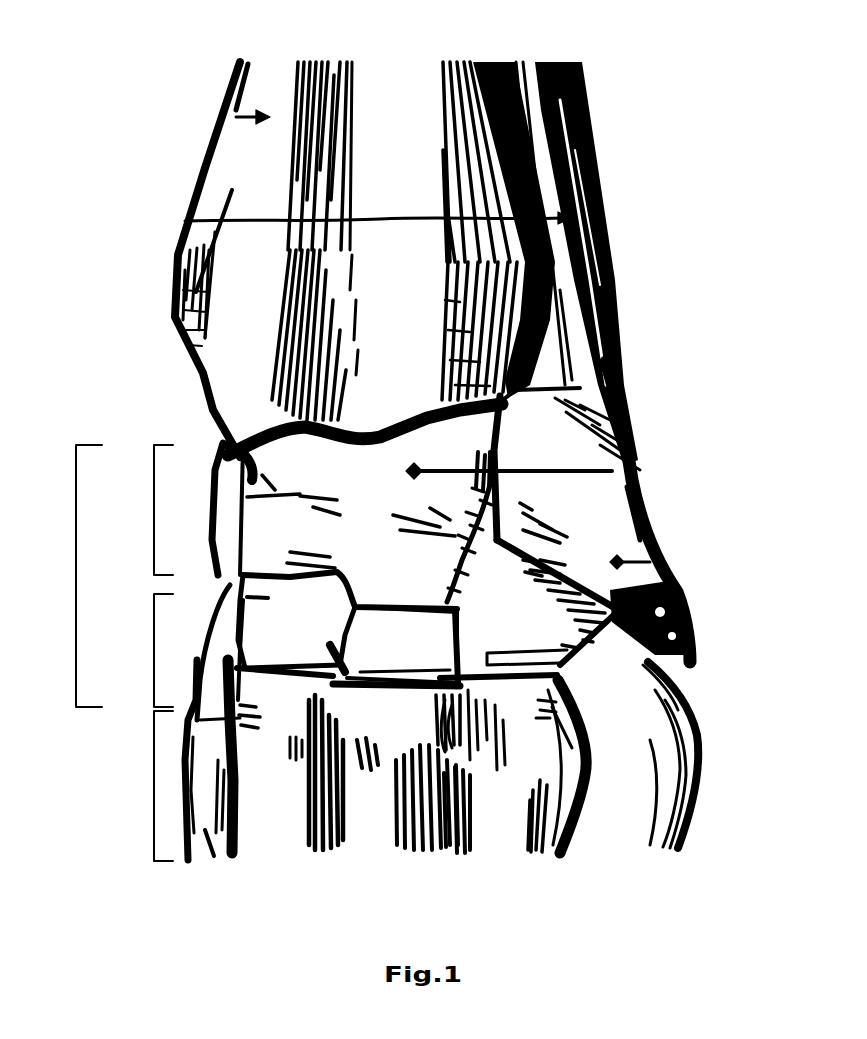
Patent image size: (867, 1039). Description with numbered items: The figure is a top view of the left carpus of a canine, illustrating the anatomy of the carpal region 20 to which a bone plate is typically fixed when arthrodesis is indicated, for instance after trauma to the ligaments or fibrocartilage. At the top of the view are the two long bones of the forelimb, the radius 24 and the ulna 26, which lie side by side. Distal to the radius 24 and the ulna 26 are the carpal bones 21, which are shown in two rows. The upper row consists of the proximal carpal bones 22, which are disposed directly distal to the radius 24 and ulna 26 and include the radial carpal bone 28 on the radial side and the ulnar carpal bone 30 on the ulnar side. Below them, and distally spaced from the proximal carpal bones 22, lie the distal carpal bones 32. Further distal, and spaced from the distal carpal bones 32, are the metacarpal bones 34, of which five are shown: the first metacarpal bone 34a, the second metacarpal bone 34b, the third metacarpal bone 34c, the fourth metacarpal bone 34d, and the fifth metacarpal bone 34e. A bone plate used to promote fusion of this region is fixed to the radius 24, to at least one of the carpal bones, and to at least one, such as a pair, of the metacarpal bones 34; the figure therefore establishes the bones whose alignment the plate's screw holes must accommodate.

The carpal region 20 is at (163, 83).
The carpal bones 21 is at (76, 582).
The proximal carpal bones 22 is at (154, 506).
The radius 24 is at (272, 172).
The ulna 26 is at (562, 188).
The radial carpal bone 28 is at (375, 468).
The ulnar carpal bone 30 is at (592, 542).
The distal carpal bones 32 is at (154, 656).
The metacarpal bones 34 is at (154, 788).
The first metacarpal bone 34a is at (215, 840).
The second metacarpal bone 34b is at (277, 810).
The third metacarpal bone 34c is at (390, 807).
The fourth metacarpal bone 34d is at (507, 820).
The fifth metacarpal bone 34e is at (607, 820).